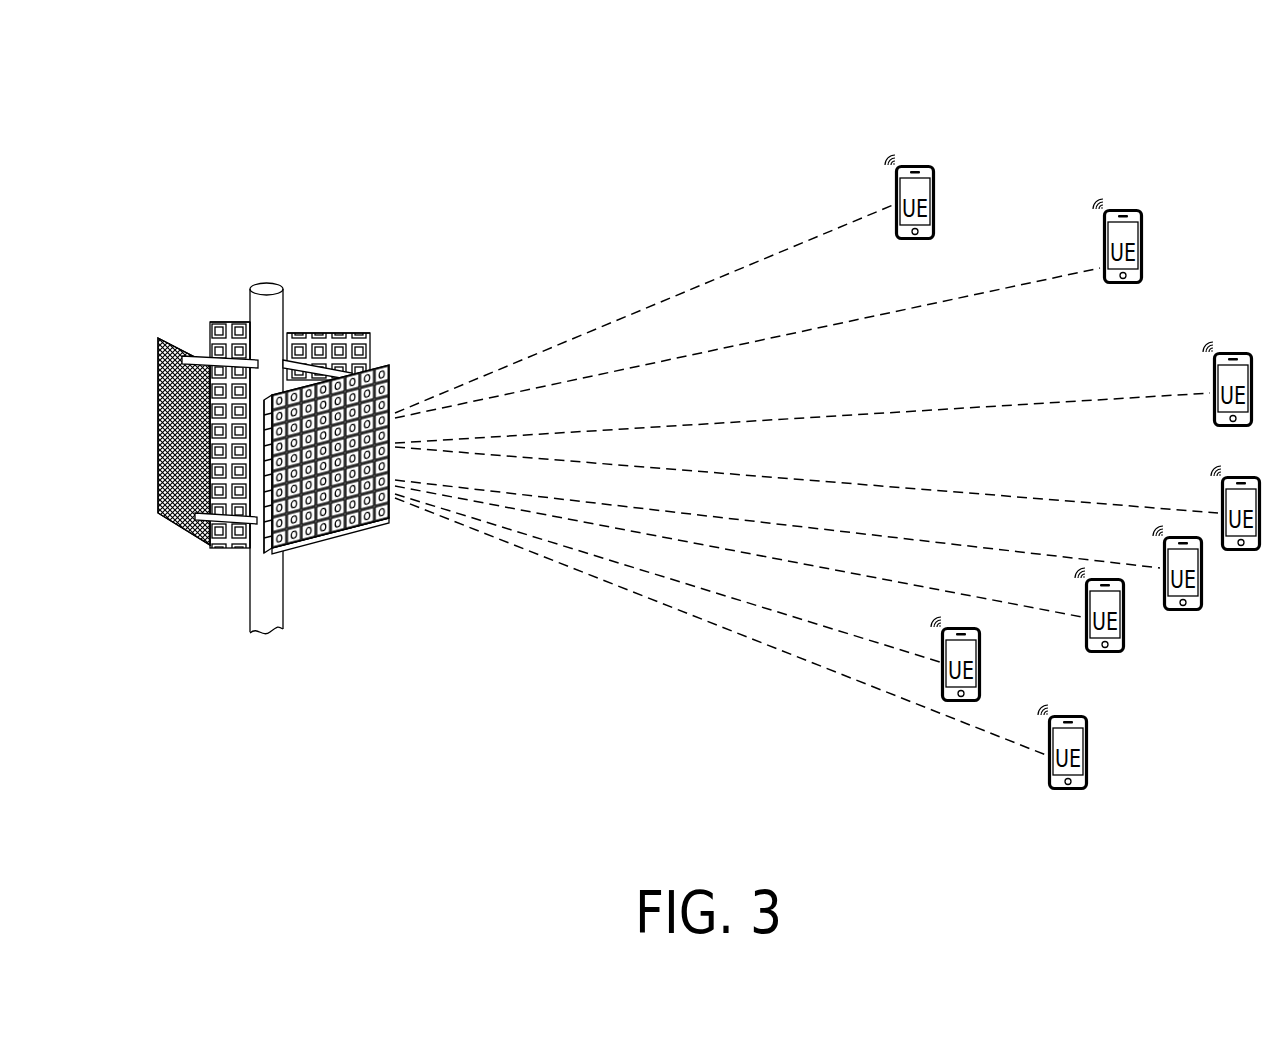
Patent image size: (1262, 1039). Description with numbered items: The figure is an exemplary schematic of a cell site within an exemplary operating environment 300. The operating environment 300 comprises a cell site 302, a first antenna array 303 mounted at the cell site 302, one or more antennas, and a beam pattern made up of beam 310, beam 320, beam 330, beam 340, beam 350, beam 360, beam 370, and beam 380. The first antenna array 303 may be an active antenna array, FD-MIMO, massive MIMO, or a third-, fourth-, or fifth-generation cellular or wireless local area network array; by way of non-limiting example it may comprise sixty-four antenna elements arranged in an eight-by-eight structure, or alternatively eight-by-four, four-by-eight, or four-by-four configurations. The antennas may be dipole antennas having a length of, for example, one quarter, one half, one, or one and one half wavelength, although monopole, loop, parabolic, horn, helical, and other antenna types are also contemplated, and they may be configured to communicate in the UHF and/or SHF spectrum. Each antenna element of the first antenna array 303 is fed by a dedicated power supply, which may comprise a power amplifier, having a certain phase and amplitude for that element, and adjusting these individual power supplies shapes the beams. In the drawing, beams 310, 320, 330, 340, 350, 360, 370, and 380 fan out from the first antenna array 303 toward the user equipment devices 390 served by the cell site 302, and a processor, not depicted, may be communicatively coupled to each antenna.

The operating environment 300 is at (124, 96).
The cell site 302 is at (268, 284).
The first antenna array 303 is at (406, 386).
The beam 310 is at (668, 300).
The beam 320 is at (752, 340).
The beam 330 is at (856, 414).
The beam 340 is at (912, 486).
The beam 350 is at (814, 529).
The beam 360 is at (845, 571).
The beam 370 is at (736, 600).
The beam 380 is at (768, 643).
The user equipment (UE) 390 is at (957, 178).